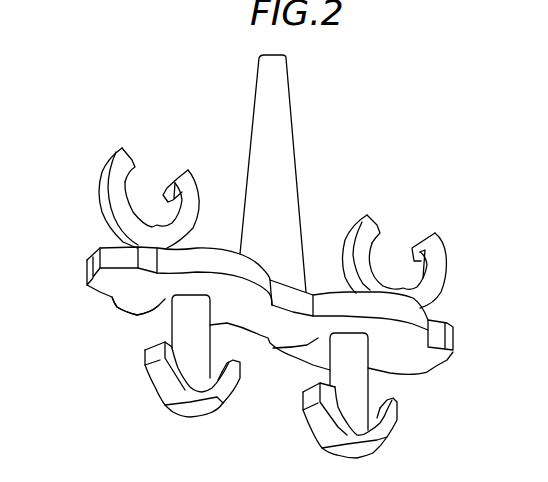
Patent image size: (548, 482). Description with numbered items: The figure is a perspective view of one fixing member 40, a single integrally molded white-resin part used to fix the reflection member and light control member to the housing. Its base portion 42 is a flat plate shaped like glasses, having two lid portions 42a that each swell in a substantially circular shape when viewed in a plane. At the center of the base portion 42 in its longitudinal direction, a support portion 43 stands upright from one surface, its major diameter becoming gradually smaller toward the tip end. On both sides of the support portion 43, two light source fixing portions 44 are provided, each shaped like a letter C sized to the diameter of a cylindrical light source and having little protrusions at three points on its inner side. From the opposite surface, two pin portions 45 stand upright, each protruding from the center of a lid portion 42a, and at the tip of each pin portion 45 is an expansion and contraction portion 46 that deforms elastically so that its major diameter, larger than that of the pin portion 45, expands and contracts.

The fixing member 40 is at (433, 135).
The base portion 42 is at (455, 343).
The lid portion 42a is at (168, 307).
The support portion 43 is at (292, 128).
The light source fixing portion 44 is at (100, 188).
The pin portion 45 is at (178, 333).
The expansion and contraction portion 46 is at (160, 392).